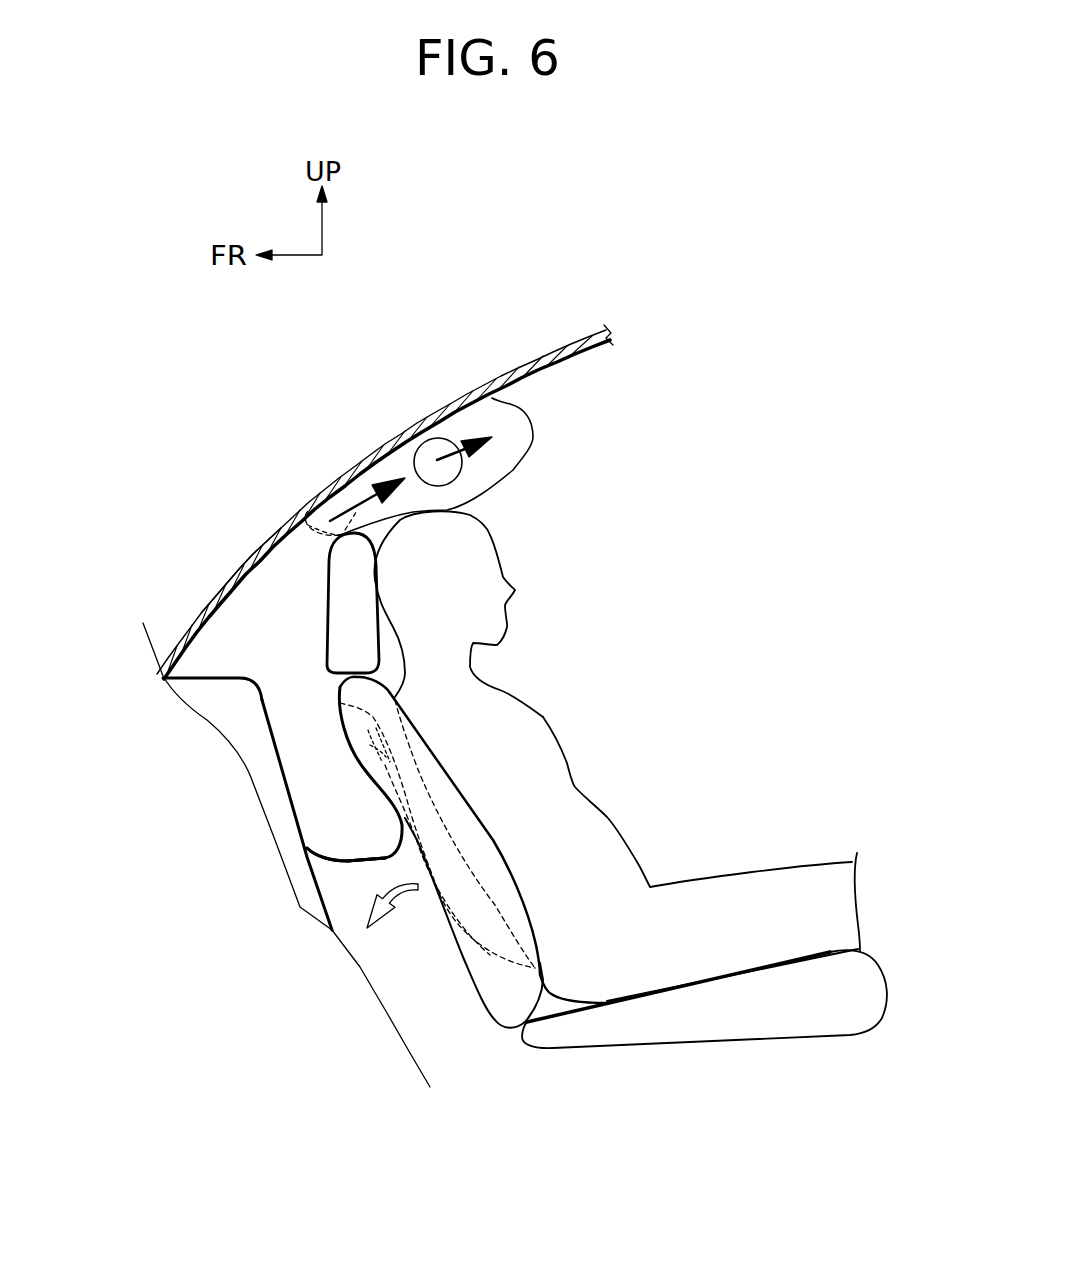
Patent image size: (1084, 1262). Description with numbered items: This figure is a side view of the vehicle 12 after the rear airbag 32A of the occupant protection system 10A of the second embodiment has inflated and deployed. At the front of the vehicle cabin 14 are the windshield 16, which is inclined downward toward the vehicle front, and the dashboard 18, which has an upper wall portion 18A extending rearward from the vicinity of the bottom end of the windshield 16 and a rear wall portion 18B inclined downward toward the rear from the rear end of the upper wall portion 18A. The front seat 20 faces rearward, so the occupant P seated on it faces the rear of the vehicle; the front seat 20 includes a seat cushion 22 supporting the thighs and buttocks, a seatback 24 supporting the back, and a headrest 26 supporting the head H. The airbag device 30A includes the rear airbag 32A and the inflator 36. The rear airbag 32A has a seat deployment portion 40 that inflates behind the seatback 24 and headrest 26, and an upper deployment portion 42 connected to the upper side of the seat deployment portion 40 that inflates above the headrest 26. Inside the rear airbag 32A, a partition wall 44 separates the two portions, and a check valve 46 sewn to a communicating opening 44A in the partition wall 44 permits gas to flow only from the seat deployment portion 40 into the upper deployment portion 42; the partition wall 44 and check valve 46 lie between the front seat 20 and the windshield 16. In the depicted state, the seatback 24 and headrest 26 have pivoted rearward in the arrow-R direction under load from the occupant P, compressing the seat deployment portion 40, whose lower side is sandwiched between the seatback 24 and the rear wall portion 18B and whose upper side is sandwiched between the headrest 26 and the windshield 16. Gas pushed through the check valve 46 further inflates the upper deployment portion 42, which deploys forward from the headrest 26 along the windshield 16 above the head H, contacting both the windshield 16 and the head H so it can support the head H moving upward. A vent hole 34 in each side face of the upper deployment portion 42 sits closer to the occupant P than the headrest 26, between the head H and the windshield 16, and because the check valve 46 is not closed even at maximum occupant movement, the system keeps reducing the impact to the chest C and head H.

The vehicle 12 is at (181, 410).
The vehicle cabin 14 is at (539, 411).
The windshield 16 is at (567, 357).
The dashboard 18 is at (182, 485).
The upper wall portion 18A is at (221, 678).
The rear wall portion 18B is at (270, 710).
The occupant protection system 10A is at (245, 566).
The front seat 20 is at (509, 863).
The seat cushion 22 is at (865, 1007).
The seatback 24 is at (505, 987).
The headrest 26 is at (370, 653).
The airbag device 30A is at (362, 861).
The rear airbag 32A is at (325, 861).
The vent hole 34 is at (440, 438).
The inflator 36 is at (438, 890).
The seat deployment portion 40 is at (300, 765).
The upper deployment portion 42 is at (497, 423).
The partition wall 44 is at (308, 525).
The communicating opening 44A is at (327, 497).
The check valve 46 is at (357, 510).
The head H is at (467, 522).
The occupant P is at (502, 565).
The chest C is at (547, 718).
The arrow-R direction R is at (392, 896).